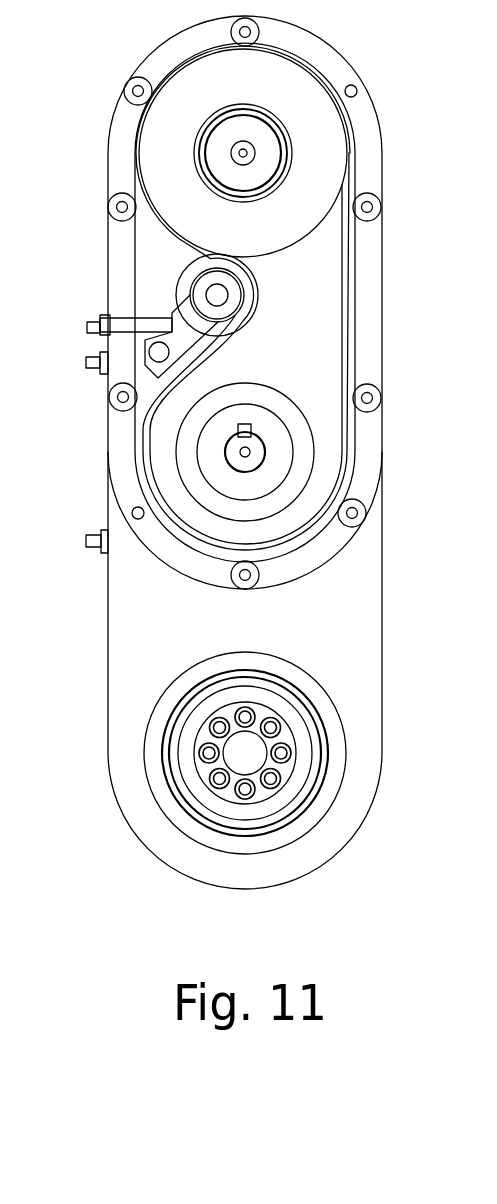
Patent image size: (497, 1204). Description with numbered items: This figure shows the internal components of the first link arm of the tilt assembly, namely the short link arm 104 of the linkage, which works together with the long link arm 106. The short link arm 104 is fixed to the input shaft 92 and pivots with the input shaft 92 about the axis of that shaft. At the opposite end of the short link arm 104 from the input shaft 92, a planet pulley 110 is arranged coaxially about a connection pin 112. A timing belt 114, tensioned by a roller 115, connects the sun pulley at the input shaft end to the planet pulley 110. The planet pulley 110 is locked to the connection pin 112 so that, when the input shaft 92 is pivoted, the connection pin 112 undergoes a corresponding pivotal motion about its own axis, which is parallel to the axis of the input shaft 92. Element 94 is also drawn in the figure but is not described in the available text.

The input shaft 92 is at (243, 450).
The wheel hub 94 is at (240, 755).
The short link arm 104 is at (180, 568).
The long link arm 106 is at (153, 852).
The planet pulley 110 is at (317, 232).
The connection pin 112 is at (243, 148).
The timing belt 114 is at (206, 356).
The roller 115 is at (183, 271).